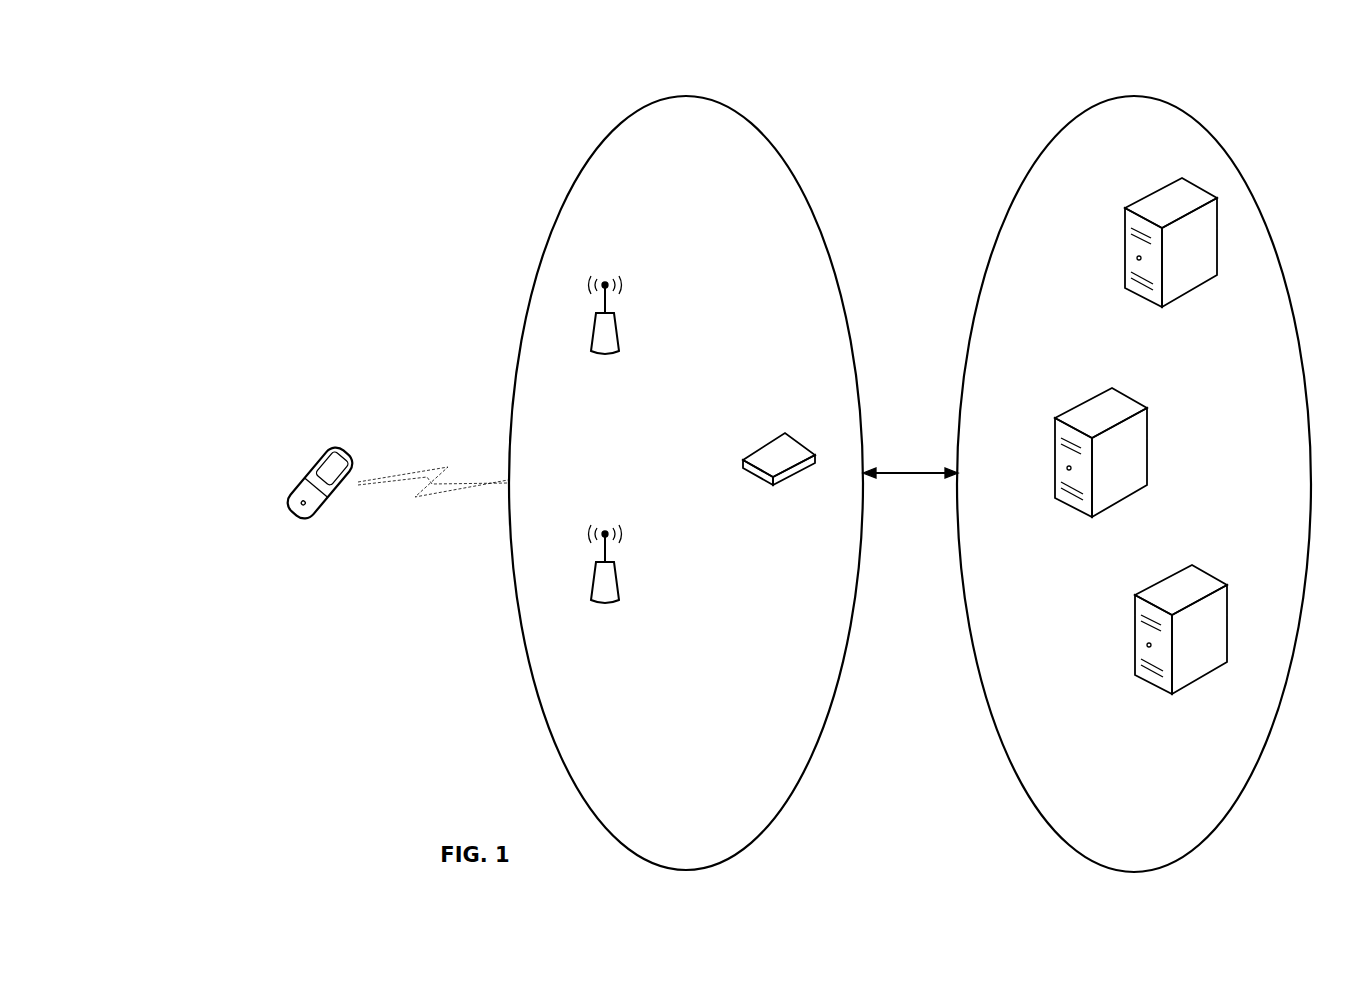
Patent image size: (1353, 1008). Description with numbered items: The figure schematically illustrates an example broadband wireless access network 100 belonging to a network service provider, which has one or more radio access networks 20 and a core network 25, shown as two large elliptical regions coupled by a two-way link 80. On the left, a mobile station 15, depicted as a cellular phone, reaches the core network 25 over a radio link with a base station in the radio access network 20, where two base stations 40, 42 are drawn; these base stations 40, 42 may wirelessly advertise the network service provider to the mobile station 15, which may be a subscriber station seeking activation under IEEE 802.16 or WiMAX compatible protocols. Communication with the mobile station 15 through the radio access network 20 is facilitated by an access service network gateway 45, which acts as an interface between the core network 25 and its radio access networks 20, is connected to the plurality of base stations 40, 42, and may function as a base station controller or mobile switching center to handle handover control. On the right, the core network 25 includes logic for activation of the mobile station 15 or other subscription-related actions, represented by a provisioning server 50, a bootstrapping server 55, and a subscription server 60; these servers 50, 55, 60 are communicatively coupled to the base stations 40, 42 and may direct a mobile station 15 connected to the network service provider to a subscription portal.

The broadband wireless access (BWA) network 100 is at (918, 50).
The mobile station (MS) 15 is at (349, 438).
The radio access network (RAN) 20 is at (791, 815).
The core network 25 is at (1226, 835).
The base station (BS) 40 is at (628, 309).
The base station (BS) 42 is at (637, 575).
The access service network gateway (ASN-GW) 45 is at (779, 417).
The provisioning server 50 is at (1148, 181).
The bootstrapping server 55 is at (1158, 416).
The subscription server 60 is at (1230, 568).
The link between radio access network and core network 80 is at (899, 488).